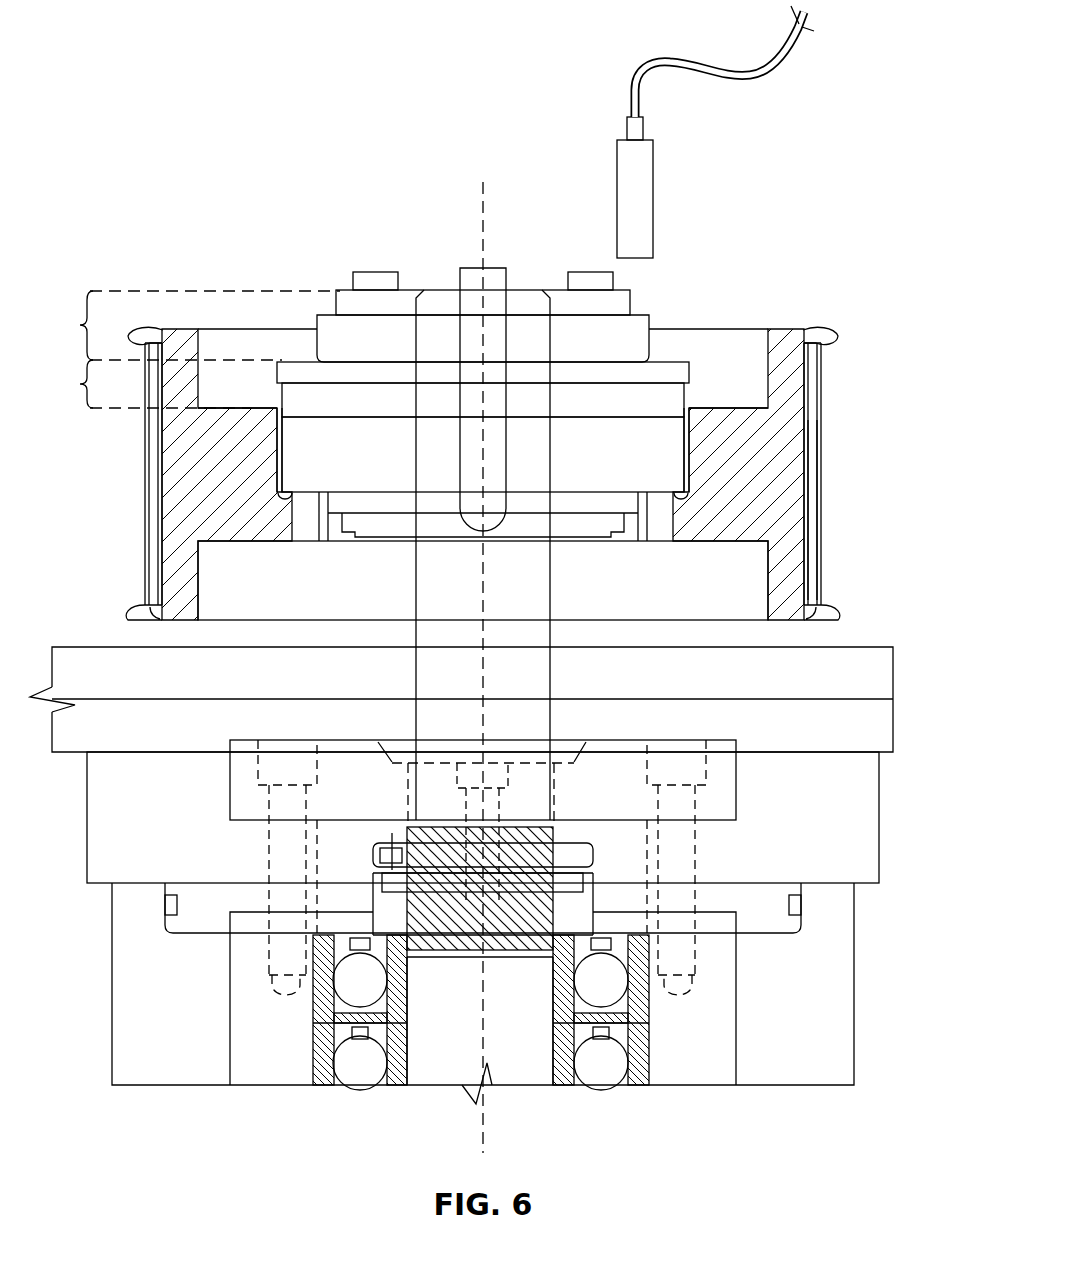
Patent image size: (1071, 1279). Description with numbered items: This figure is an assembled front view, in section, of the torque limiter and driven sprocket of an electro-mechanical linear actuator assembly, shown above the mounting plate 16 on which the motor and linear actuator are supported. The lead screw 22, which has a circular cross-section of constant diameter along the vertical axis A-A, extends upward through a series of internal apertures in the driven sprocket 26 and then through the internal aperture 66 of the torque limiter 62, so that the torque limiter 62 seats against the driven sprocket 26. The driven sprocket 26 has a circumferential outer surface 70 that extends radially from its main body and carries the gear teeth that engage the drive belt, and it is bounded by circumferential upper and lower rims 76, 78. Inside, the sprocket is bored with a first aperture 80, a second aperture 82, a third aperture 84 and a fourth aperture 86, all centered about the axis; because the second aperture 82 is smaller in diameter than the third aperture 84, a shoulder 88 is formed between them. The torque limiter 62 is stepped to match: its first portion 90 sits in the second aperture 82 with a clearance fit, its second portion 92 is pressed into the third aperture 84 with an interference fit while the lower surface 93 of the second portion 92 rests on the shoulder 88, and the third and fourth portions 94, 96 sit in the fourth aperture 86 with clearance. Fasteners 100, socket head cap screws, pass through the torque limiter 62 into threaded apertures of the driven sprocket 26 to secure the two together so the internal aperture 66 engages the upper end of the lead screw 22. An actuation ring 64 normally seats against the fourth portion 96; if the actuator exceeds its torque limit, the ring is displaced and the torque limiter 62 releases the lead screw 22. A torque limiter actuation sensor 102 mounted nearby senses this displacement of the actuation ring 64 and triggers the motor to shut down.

The mounting plate 16 is at (880, 817).
The lead screw 22 is at (551, 563).
The driven sprocket 26 is at (822, 468).
The torque limiter 62 is at (649, 323).
The actuation ring 64 is at (632, 303).
The internal aperture 66 is at (551, 462).
The circumferential outer surface 70 is at (822, 407).
The upper rim 76 is at (833, 335).
The lower rim 78 is at (830, 630).
The first aperture 80 is at (212, 595).
The second aperture 82 is at (300, 535).
The third aperture 84 is at (272, 450).
The fourth aperture 86 is at (233, 338).
The shoulder 88 is at (681, 498).
The first portion 90 is at (650, 503).
The second portion 92 is at (689, 425).
The lower surface 93 is at (270, 500).
The third portion 94 is at (367, 384).
The fourth portion 96 is at (69, 325).
The fasteners 100 is at (375, 270).
The torque limiter actuation sensor 102 is at (655, 200).